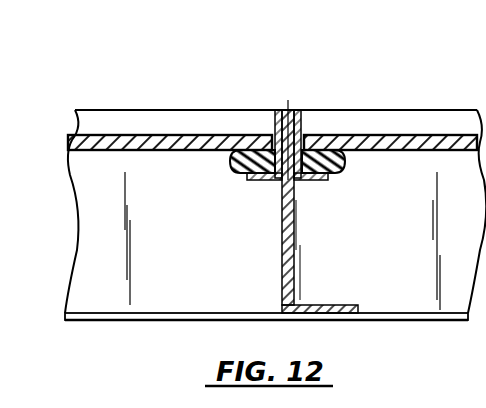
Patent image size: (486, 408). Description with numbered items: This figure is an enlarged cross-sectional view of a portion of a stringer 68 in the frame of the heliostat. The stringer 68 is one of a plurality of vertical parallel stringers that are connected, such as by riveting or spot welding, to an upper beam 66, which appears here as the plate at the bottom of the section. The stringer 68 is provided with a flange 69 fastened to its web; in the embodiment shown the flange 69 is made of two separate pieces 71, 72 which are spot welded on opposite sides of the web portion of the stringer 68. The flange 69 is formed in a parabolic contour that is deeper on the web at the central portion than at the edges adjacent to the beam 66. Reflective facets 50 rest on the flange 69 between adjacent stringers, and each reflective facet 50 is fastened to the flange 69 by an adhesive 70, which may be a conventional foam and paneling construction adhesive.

The reflective facet 50 is at (165, 140).
The upper beam 66 is at (418, 320).
The stringer 68 is at (288, 105).
The flange 69 is at (277, 148).
The adhesive 70 is at (345, 163).
The flange piece 71 is at (318, 181).
The flange piece 72 is at (262, 182).